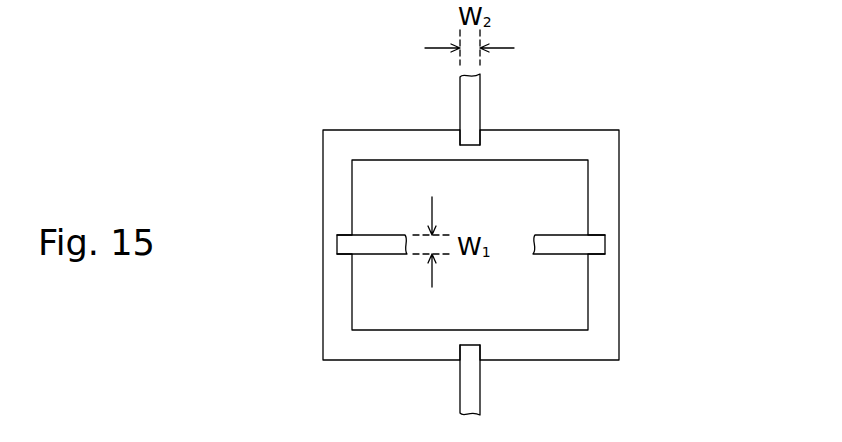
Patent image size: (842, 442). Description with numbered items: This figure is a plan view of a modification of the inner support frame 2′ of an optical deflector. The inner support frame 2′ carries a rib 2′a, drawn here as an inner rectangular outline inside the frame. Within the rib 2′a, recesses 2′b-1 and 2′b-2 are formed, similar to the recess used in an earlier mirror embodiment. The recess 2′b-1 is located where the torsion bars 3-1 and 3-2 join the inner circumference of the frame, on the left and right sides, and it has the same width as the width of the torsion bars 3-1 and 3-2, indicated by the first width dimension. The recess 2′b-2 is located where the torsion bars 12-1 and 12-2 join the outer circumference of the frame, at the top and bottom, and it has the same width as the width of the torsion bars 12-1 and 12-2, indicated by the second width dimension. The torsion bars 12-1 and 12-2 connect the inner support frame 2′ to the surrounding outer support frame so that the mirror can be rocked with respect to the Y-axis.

The inner support frame 2′ is at (619, 160).
The rib 2′a is at (603, 190).
The recess 2′b-1 is at (342, 245).
The recess 2′b-2 is at (470, 140).
The torsion bar 12-1 is at (480, 95).
The torsion bar 12-2 is at (480, 395).
The torsion bar 3-1 is at (395, 235).
The torsion bar 3-2 is at (545, 235).